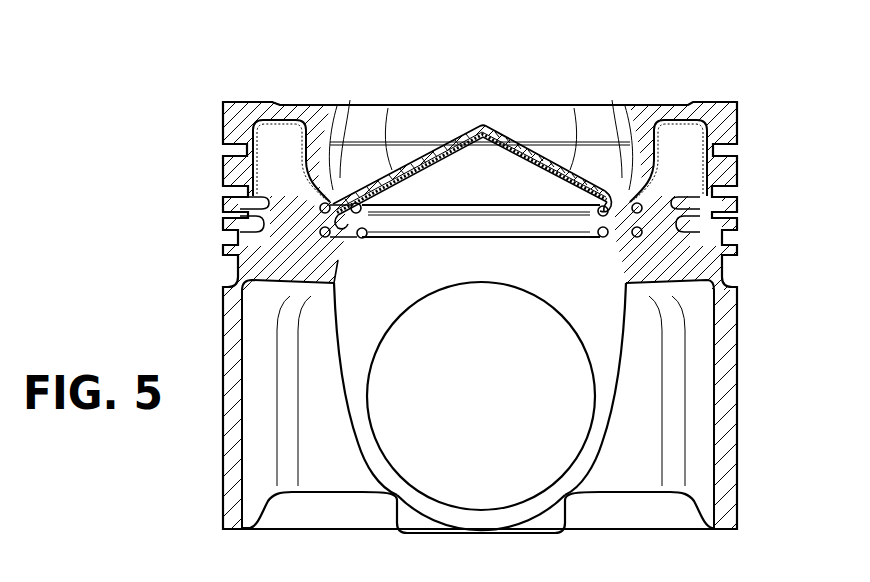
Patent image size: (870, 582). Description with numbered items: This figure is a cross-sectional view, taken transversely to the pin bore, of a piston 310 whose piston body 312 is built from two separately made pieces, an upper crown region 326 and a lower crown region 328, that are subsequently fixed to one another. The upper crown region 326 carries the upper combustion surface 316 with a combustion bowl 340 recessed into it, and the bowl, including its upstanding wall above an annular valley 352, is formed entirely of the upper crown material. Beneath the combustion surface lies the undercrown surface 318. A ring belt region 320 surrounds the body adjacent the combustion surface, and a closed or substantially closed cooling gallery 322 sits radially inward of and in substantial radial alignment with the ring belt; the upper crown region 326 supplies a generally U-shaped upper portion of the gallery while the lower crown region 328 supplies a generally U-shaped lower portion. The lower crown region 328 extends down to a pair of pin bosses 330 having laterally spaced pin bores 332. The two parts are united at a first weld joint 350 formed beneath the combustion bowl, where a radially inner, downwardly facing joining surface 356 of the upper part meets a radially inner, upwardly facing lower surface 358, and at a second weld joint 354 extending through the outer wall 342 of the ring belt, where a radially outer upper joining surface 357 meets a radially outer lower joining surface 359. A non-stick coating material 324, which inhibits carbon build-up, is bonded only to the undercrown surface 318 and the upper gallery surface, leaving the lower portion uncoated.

The piston 310 is at (784, 76).
The piston body 312 is at (722, 110).
The upper combustion surface 316 is at (247, 101).
The undercrown surface 318 is at (458, 158).
The ring belt region 320 is at (112, 100).
The cooling gallery 322 is at (668, 150).
The non-stick coating material 324 is at (275, 148).
The upper crown region 326 is at (764, 102).
The lower crown region 328 is at (764, 250).
The pin boss 330 is at (595, 458).
The pin bore 332 is at (396, 468).
The combustion bowl 340 is at (399, 128).
The outer wall 342 is at (245, 151).
The first weld joint 350 is at (325, 205).
The annular valley 352 is at (340, 103).
The second weld joint 354 is at (248, 202).
The radially inner downwardly facing joining surface 356 is at (336, 245).
The radially outer downwardly facing upper joining surface 357 is at (240, 223).
The radially inner upwardly facing lower surface 358 is at (380, 212).
The radially outer upwardly facing lower joining surface 359 is at (228, 100).